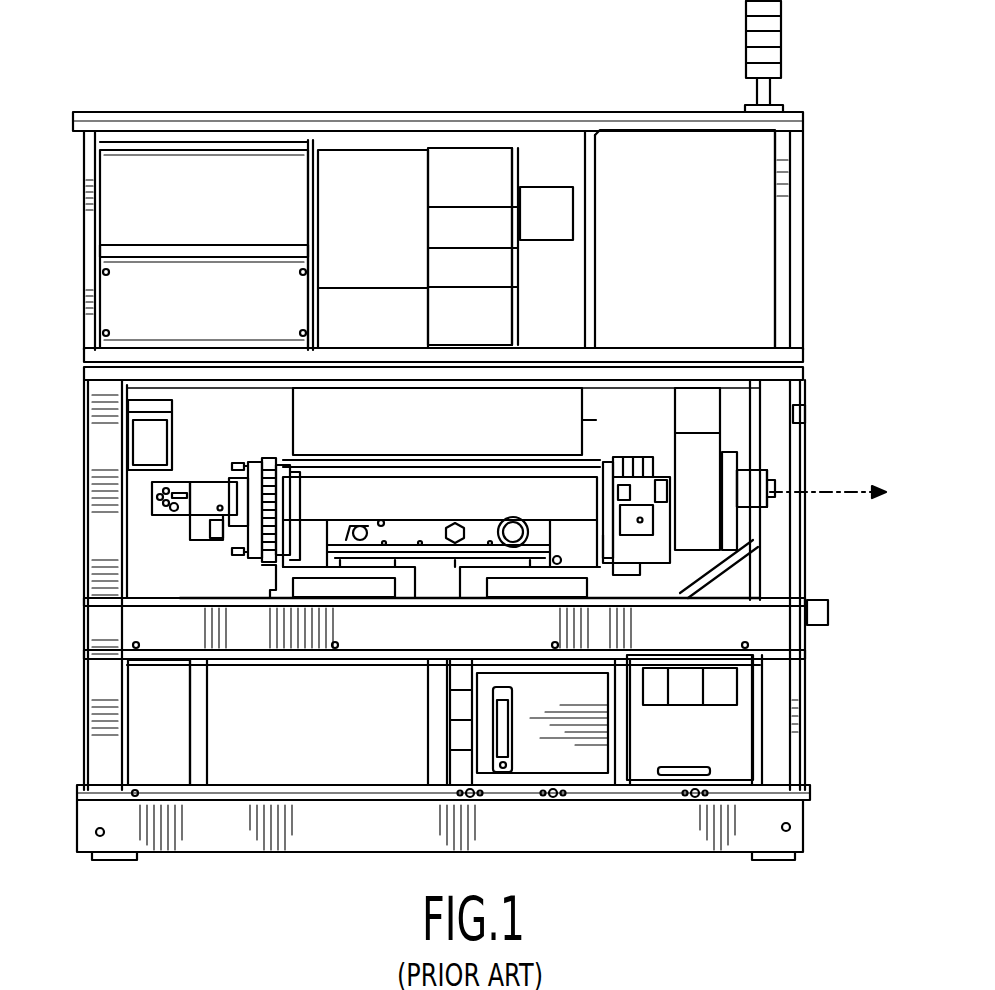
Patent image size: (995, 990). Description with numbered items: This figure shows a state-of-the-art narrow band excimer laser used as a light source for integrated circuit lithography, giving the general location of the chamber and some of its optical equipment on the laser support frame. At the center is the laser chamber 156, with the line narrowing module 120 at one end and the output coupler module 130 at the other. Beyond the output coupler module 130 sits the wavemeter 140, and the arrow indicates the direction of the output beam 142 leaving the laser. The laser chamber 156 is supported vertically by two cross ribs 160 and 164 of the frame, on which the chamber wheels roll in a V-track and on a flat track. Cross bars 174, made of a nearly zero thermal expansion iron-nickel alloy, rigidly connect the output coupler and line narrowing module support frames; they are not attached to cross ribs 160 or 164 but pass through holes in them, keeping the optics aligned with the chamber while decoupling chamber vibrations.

The line narrowing module 120 is at (170, 524).
The output coupler module 130 is at (646, 447).
The wavemeter 140 is at (767, 440).
The output beam 142 is at (855, 492).
The laser chamber 156 is at (346, 511).
The cross rib 160 is at (270, 572).
The cross rib 164 is at (605, 580).
The cross bars 174 is at (273, 460).